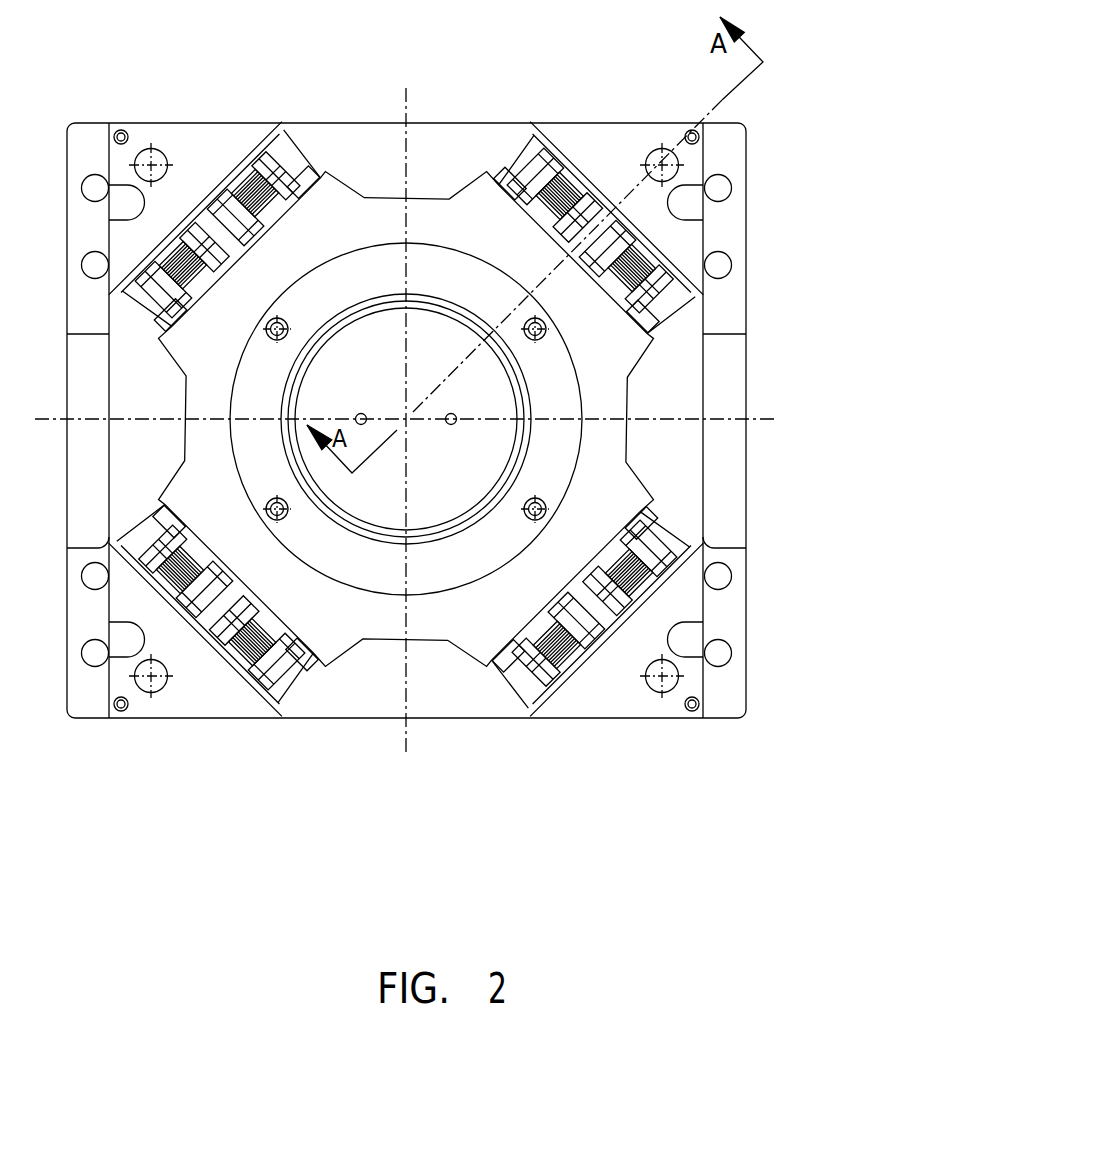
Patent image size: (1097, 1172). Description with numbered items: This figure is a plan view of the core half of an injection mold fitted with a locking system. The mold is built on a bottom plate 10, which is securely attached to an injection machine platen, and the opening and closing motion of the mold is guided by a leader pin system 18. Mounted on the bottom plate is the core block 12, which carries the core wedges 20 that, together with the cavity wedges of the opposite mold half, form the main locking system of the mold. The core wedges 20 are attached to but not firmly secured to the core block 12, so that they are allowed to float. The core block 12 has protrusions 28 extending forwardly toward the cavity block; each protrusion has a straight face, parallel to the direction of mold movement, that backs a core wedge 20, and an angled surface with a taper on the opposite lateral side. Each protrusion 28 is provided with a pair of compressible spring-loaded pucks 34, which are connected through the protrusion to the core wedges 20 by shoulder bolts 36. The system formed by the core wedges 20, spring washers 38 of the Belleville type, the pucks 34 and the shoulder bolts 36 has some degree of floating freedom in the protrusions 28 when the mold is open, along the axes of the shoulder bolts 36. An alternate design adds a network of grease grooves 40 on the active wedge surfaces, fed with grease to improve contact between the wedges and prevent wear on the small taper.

The bottom plate 10 is at (713, 352).
The core block 12 is at (668, 392).
The leader pin system 18 is at (673, 170).
The core wedges 20 is at (657, 512).
The protrusions 28 is at (731, 575).
The spring-loaded pucks 34 is at (577, 672).
The shoulder bolts 36 is at (600, 658).
The spring washers 38 is at (580, 630).
The grease grooves 40 is at (658, 555).